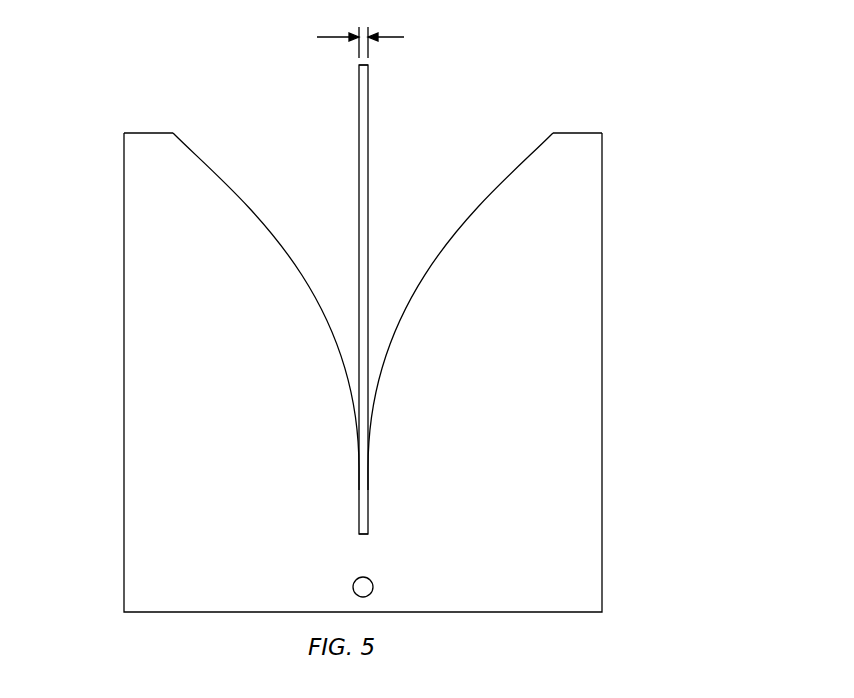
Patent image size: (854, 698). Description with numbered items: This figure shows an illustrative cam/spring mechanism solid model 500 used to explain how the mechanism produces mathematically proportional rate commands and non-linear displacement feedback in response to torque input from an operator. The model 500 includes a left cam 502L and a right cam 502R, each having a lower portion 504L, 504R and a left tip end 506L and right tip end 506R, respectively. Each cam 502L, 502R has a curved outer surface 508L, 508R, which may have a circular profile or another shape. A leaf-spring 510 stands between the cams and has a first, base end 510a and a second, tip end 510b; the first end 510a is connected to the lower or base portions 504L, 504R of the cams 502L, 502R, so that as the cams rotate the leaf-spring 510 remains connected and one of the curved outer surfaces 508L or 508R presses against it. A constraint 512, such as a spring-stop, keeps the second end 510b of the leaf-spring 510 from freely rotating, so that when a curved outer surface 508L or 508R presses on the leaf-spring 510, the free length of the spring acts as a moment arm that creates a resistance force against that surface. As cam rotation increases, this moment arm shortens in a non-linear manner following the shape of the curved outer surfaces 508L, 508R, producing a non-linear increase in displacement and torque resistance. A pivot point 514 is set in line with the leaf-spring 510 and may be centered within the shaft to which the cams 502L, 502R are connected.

The cam/spring mechanism solid model 500 is at (133, 58).
The left cam 502L is at (124, 373).
The right cam 502R is at (602, 373).
The lower portion of left cam 504L is at (124, 532).
The lower portion of right cam 504R is at (602, 532).
The left tip end 506L is at (124, 135).
The right tip end 506R is at (602, 140).
The curved outer surface of left cam 508L is at (213, 168).
The curved outer surface of right cam 508R is at (514, 170).
The leaf-spring 510 is at (368, 217).
The first end of leaf-spring 510a is at (359, 519).
The second end of leaf-spring 510b is at (359, 86).
The constraint 512 is at (442, 42).
The pivot point 514 is at (371, 580).